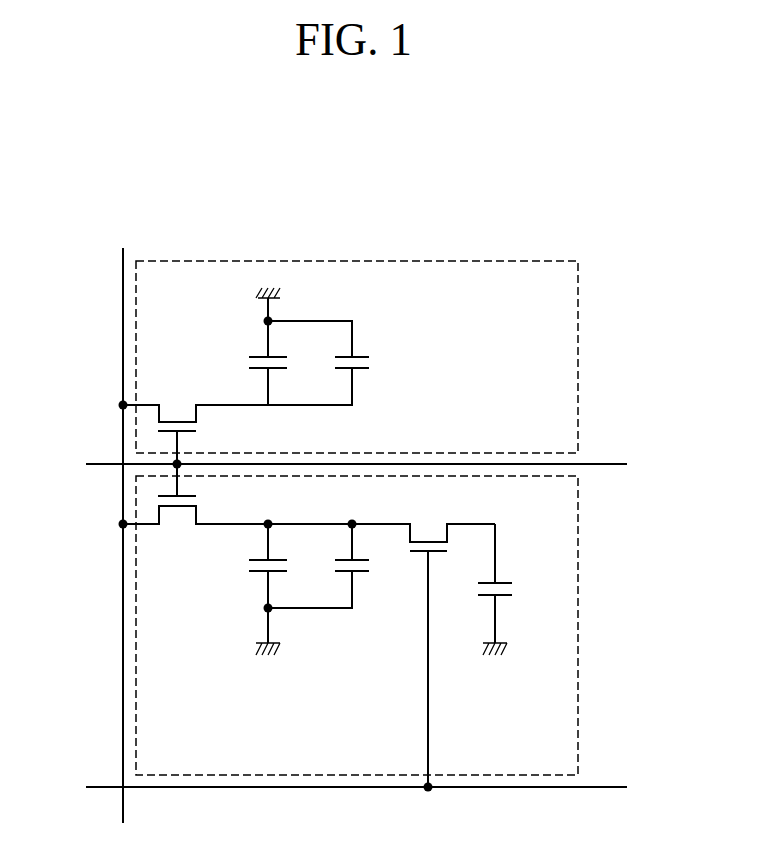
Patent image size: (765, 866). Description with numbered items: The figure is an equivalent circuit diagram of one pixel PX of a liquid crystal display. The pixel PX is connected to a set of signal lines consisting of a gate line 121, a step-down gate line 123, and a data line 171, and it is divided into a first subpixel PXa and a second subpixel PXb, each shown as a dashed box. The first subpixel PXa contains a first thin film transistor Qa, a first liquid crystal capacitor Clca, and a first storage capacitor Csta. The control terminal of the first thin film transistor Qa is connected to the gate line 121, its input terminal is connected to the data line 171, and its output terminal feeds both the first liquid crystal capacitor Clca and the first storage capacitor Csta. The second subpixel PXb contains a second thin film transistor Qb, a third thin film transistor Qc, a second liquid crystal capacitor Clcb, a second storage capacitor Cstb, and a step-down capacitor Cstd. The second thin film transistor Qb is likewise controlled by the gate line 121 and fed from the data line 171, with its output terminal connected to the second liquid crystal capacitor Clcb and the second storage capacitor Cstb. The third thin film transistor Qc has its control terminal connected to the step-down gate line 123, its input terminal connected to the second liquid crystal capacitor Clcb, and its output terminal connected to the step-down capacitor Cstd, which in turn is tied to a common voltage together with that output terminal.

The data line 171 is at (123, 293).
The gate line 121 is at (100, 463).
The step-down gate line 123 is at (602, 787).
The pixel PX is at (225, 235).
The first subpixel PXa is at (456, 260).
The second subpixel PXb is at (578, 528).
The first thin film transistor Qa is at (195, 424).
The second thin film transistor Qb is at (195, 505).
The third thin film transistor Qc is at (423, 644).
The first liquid crystal capacitor Clca is at (246, 346).
The first storage capacitor Csta is at (341, 363).
The second liquid crystal capacitor Clcb is at (246, 589).
The second storage capacitor Cstb is at (341, 566).
The step-down capacitor Cstd is at (519, 589).